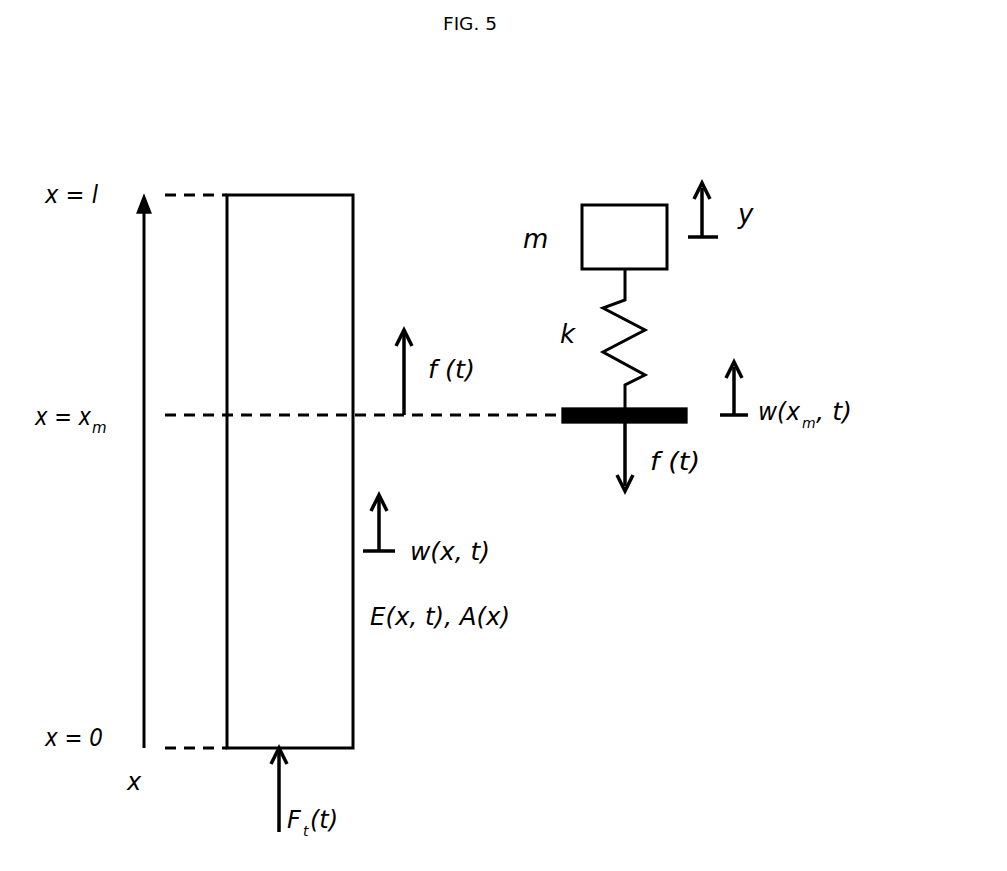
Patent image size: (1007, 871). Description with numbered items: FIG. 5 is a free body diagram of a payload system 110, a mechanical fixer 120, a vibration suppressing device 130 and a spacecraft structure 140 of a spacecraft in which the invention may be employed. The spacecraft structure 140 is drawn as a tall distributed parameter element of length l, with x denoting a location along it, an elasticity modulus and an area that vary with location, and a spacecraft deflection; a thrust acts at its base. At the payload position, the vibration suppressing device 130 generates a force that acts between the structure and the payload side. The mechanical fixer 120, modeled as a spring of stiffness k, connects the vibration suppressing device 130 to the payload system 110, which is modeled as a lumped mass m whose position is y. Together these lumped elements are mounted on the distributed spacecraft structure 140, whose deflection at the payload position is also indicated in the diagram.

The payload system 110 is at (607, 205).
The mechanical fixer 120 is at (600, 308).
The vibration suppressing device 130 is at (577, 425).
The spacecraft structure 140 is at (353, 718).